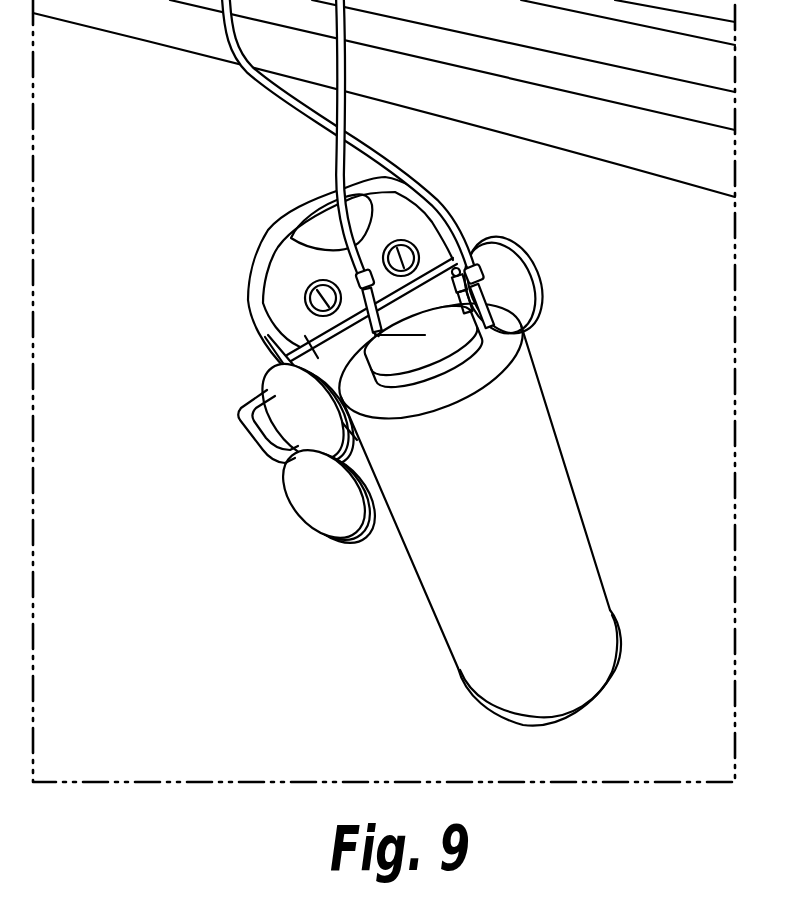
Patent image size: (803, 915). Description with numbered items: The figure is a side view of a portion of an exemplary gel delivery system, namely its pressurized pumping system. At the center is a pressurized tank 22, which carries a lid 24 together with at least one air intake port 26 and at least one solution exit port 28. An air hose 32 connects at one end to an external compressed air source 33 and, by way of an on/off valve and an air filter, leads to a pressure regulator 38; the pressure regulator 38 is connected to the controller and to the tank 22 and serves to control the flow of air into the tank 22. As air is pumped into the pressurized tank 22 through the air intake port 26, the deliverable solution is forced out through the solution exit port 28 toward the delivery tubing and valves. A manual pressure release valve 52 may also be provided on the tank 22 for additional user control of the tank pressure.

The pressurized tank 22 is at (497, 450).
The lid 24 is at (300, 422).
The air intake port 26 is at (498, 304).
The solution exit port 28 is at (360, 300).
The air hose 32 is at (440, 203).
The external compressed air source 33 is at (262, 430).
The pressure regulator 38 is at (305, 292).
The manual pressure release valve 52 is at (493, 287).